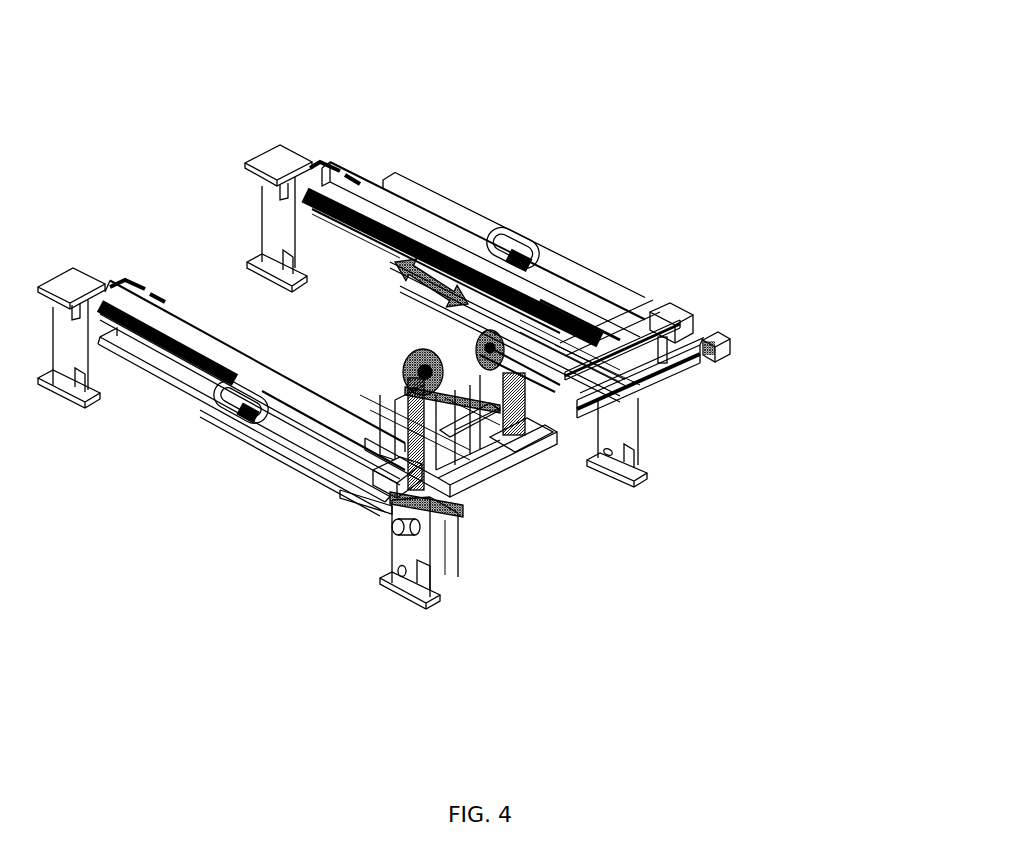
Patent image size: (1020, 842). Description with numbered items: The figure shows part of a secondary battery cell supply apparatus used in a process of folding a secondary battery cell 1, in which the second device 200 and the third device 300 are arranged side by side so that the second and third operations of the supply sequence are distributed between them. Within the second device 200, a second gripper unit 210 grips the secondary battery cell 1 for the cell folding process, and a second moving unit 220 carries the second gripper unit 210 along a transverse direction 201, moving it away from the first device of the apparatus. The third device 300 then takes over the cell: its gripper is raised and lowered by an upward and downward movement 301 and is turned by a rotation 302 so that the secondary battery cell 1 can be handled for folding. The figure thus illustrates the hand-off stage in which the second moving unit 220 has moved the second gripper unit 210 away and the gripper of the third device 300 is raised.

The secondary battery cell 1 is at (587, 250).
The second device 200 is at (610, 198).
The transverse direction 201 is at (478, 226).
The second gripper unit 210 is at (597, 445).
The second moving unit 220 is at (437, 575).
The third device 300 is at (391, 358).
The upward and downward movement 301 is at (348, 497).
The rotation 302 is at (280, 427).